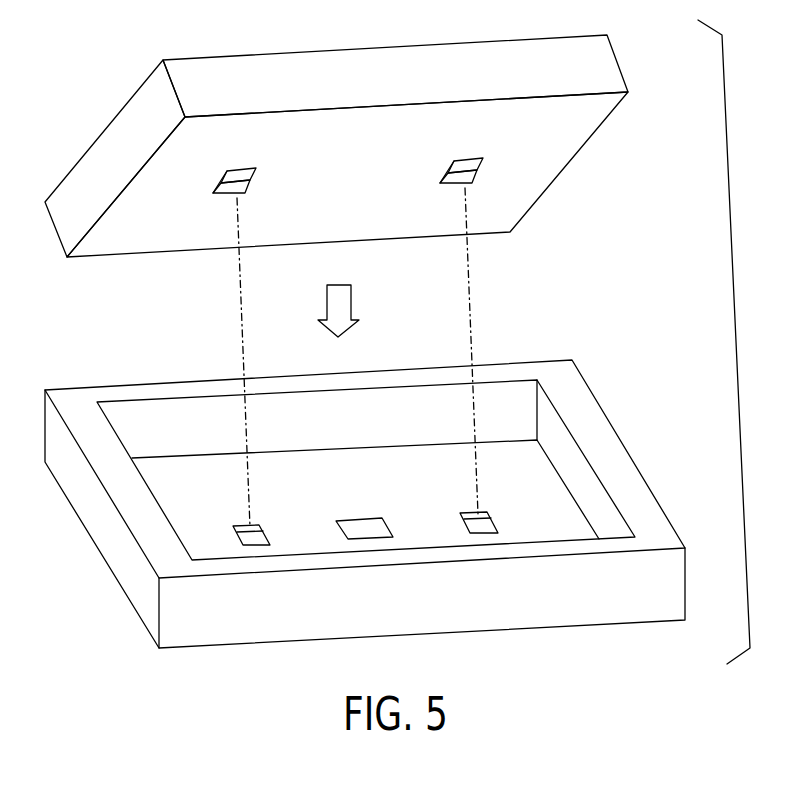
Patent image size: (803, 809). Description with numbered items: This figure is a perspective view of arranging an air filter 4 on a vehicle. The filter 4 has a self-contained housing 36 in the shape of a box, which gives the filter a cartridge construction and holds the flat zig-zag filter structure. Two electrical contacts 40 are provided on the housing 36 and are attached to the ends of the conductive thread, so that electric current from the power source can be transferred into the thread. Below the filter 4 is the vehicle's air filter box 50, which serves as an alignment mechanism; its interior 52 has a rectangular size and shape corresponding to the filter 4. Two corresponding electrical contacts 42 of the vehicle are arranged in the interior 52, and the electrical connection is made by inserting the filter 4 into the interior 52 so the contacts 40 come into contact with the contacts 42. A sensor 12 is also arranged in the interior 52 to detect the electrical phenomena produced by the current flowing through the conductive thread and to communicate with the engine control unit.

The filter 4 is at (637, 70).
The housing 36 is at (278, 67).
The electrical contacts 40 is at (243, 185).
The air filter box 50 is at (545, 617).
The interior 52 is at (530, 475).
The electrical contacts 42 is at (253, 537).
The sensor 12 is at (360, 525).